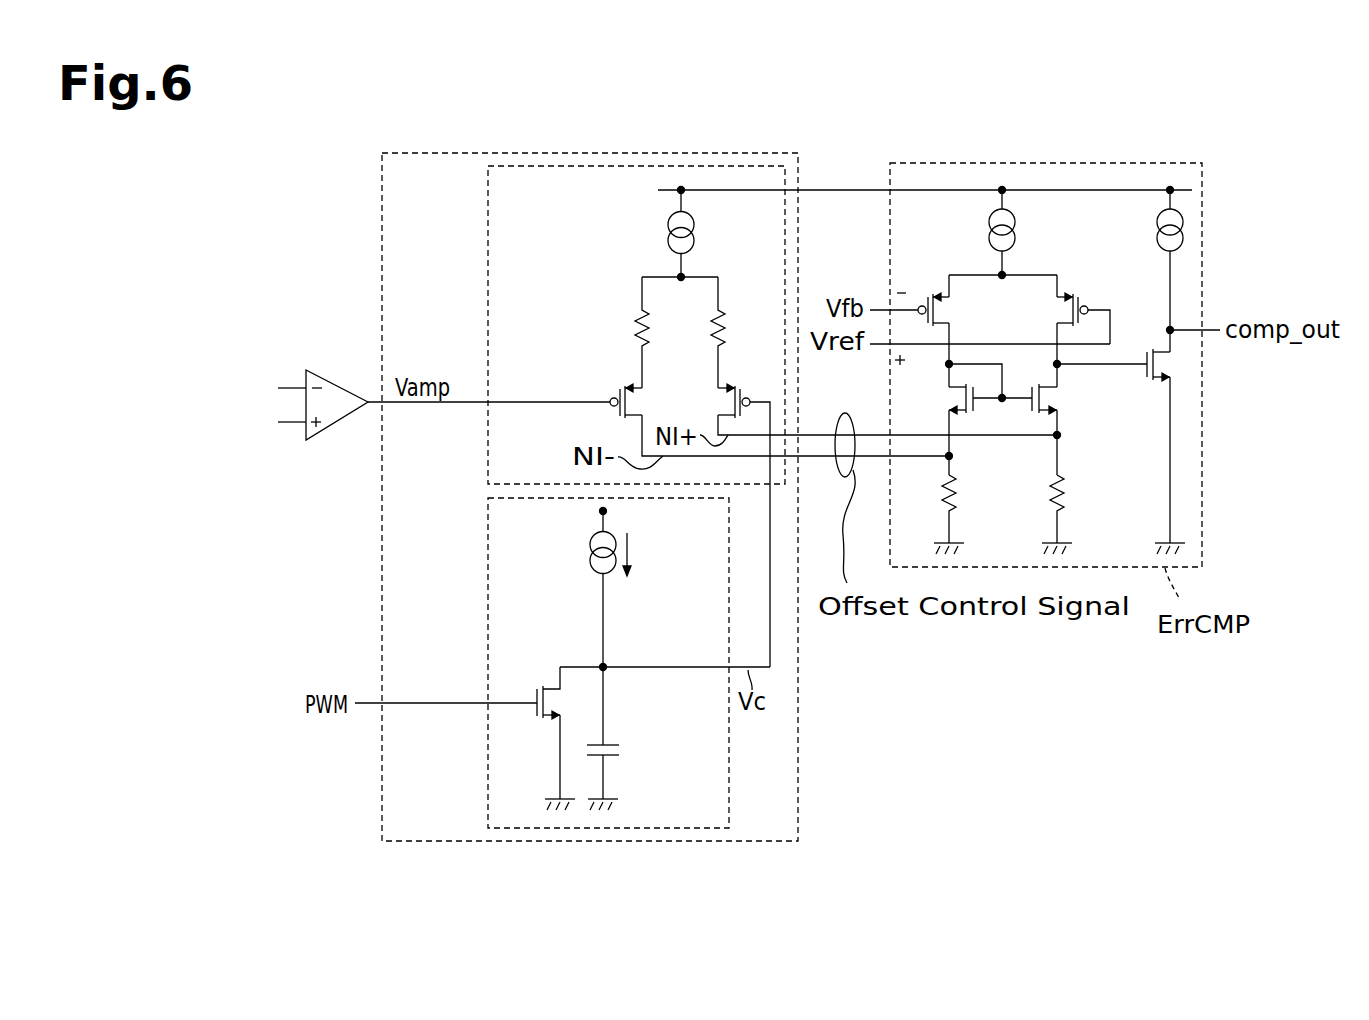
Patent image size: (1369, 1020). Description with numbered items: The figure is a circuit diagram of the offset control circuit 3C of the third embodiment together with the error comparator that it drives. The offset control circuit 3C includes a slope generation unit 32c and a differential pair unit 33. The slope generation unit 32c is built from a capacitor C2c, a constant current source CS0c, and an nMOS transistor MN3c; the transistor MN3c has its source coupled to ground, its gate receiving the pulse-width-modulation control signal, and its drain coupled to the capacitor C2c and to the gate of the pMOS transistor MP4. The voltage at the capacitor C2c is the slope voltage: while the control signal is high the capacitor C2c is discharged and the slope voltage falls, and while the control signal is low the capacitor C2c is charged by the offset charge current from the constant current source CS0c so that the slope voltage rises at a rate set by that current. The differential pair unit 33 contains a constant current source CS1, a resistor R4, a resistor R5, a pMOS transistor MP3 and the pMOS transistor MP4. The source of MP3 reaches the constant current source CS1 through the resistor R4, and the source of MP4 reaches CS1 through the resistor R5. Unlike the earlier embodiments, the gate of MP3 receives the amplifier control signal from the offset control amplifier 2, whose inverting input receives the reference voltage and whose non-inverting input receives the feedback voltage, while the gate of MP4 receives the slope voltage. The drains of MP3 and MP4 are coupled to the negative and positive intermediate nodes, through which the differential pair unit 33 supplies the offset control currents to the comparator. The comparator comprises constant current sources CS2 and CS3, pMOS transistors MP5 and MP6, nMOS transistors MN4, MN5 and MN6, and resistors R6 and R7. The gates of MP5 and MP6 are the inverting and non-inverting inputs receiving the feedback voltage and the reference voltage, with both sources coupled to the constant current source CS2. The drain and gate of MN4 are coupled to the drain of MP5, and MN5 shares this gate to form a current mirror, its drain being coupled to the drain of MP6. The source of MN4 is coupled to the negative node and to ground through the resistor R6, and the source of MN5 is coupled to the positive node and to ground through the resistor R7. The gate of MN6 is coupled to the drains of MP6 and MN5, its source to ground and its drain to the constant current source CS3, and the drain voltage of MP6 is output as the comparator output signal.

The offset control amplifier 2 is at (347, 386).
The offset control circuit 3C is at (382, 207).
The differential pair unit 33 is at (488, 212).
The slope generation unit 32c is at (488, 543).
The constant current source CS1 is at (655, 233).
The resistor R4 is at (623, 332).
The resistor R5 is at (738, 332).
The pMOS transistor MP3 is at (613, 386).
The pMOS transistor MP4 is at (746, 386).
The constant current source CS0c is at (623, 588).
The nMOS transistor MN3c is at (535, 731).
The capacitor C2c is at (629, 738).
The constant current source CS2 is at (977, 232).
The constant current source CS3 is at (1145, 271).
The pMOS transistor MP5 is at (959, 331).
The pMOS transistor MP6 is at (1084, 324).
The nMOS transistor MN4 is at (936, 429).
The nMOS transistor MN5 is at (1068, 429).
The nMOS transistor MN6 is at (1151, 451).
The resistor R6 is at (933, 514).
The resistor R7 is at (1071, 514).